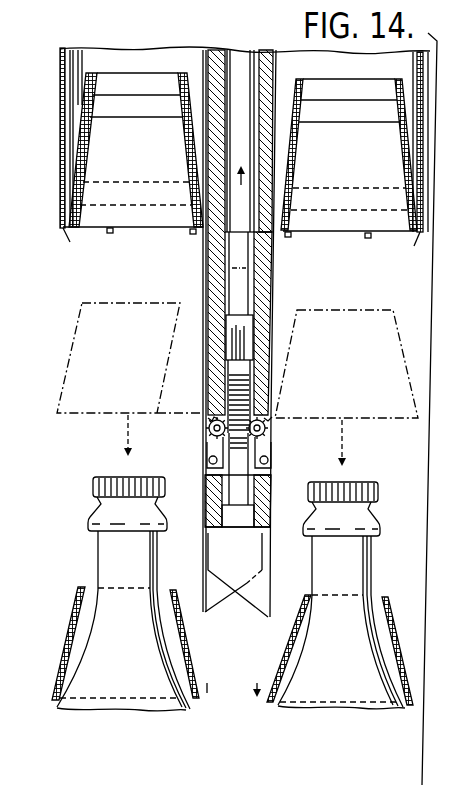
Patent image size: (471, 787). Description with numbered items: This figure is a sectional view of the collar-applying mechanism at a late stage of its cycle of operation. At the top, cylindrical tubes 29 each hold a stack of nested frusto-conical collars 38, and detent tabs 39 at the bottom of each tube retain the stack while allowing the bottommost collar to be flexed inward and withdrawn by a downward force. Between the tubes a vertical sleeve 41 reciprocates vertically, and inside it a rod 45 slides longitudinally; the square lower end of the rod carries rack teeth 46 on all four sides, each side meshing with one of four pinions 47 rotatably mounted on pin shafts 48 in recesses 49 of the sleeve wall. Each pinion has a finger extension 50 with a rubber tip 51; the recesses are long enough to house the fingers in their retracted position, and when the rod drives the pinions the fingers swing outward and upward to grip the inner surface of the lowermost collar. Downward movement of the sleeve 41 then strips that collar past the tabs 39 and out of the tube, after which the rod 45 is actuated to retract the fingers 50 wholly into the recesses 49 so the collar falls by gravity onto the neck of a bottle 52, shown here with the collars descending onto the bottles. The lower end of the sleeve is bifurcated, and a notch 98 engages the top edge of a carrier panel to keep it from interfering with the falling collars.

The cylindrical tube 29 is at (183, 53).
The rod 45 is at (240, 62).
The vertical sleeve 41 is at (272, 306).
The rack teeth 46 is at (250, 398).
The pinion 47 is at (209, 430).
The pin shaft 48 is at (208, 420).
The recess 49 is at (210, 473).
The finger extension 50 is at (229, 455).
The rubber tip 51 is at (209, 457).
The bottle 52 is at (153, 560).
The notch 98 is at (212, 572).
The frusto-conical collar 38 is at (133, 97).
The tab 39 is at (107, 233).